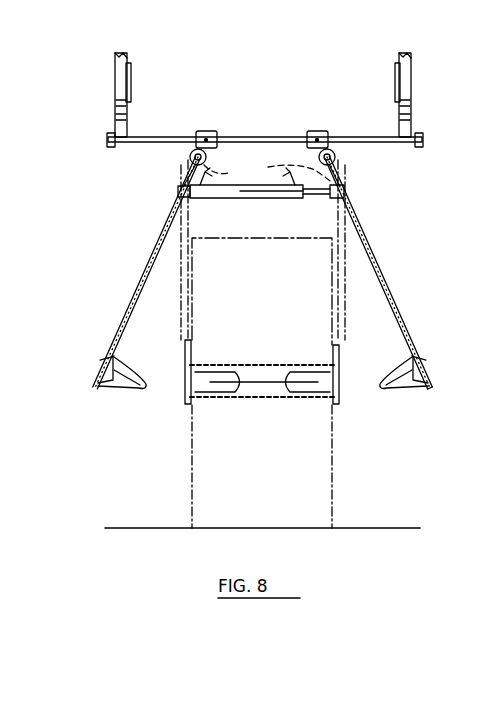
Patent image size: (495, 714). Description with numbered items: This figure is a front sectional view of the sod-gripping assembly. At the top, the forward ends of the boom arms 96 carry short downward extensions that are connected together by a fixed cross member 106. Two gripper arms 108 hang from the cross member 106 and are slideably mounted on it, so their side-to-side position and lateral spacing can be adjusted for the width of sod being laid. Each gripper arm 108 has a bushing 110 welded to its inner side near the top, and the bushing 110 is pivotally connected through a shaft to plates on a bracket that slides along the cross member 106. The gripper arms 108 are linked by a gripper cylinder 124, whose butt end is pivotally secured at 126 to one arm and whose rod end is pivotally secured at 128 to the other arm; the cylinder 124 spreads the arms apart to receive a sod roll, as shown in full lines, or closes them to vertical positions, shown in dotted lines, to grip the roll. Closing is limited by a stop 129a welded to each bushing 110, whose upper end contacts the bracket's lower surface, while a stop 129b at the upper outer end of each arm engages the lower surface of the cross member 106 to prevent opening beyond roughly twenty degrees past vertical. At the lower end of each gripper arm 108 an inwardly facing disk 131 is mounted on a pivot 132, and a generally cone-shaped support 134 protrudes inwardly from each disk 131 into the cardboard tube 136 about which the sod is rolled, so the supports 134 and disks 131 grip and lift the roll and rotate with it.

The boom arms 96 is at (114, 110).
The cross member 106 is at (243, 136).
The stop 129b is at (187, 154).
The stop 129a is at (219, 166).
The gripper arms 108 is at (140, 257).
The bushing 110 is at (343, 188).
The gripper cylinder 124 is at (244, 198).
The butt end pivot 126 is at (186, 197).
The rod end pivot 128 is at (336, 199).
The disk 131 is at (112, 362).
The cone-shaped support 134 is at (135, 390).
The cardboard tube 136 is at (248, 400).
The pivot 132 is at (432, 370).